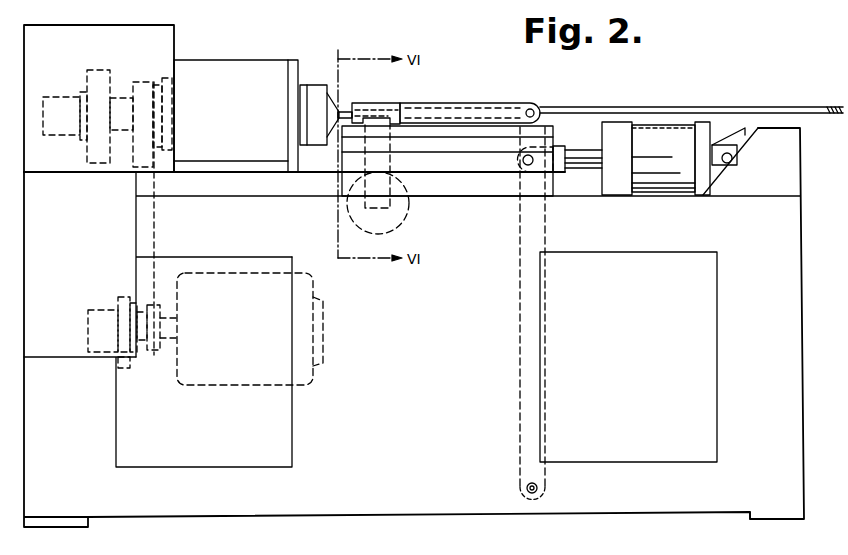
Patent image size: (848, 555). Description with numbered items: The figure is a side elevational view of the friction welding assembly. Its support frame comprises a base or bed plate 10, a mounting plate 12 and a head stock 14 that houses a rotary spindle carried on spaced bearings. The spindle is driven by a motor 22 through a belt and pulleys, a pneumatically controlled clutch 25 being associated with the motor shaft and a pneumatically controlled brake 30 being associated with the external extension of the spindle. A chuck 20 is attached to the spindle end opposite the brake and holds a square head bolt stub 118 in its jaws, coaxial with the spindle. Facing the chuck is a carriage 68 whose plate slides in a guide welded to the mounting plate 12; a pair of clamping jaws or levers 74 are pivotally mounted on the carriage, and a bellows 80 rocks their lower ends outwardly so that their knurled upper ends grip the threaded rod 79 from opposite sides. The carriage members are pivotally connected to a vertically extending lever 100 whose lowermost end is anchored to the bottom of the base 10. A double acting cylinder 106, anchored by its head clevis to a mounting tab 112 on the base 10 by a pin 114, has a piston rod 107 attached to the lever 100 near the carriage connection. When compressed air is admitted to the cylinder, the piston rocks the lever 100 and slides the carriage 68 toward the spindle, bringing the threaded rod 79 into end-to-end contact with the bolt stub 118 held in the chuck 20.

The base or bed plate 10 is at (790, 243).
The mounting plate 12 is at (243, 185).
The head stock 14 is at (213, 74).
The chuck 20 is at (317, 146).
The motor 22 is at (262, 378).
The pneumatically controlled clutch 25 is at (104, 320).
The pneumatically controlled brake 30 is at (98, 72).
The carriage 68 is at (496, 98).
The clamping jaws or levers 74 is at (384, 106).
The threaded rod 79 is at (565, 107).
The bellows 80 is at (398, 200).
The lever 100 is at (528, 317).
The double acting cylinder 106 is at (651, 140).
The piston rod 107 is at (591, 168).
The mounting tab 112 is at (745, 131).
The pin 114 is at (735, 165).
The square head bolt stub 118 is at (341, 108).